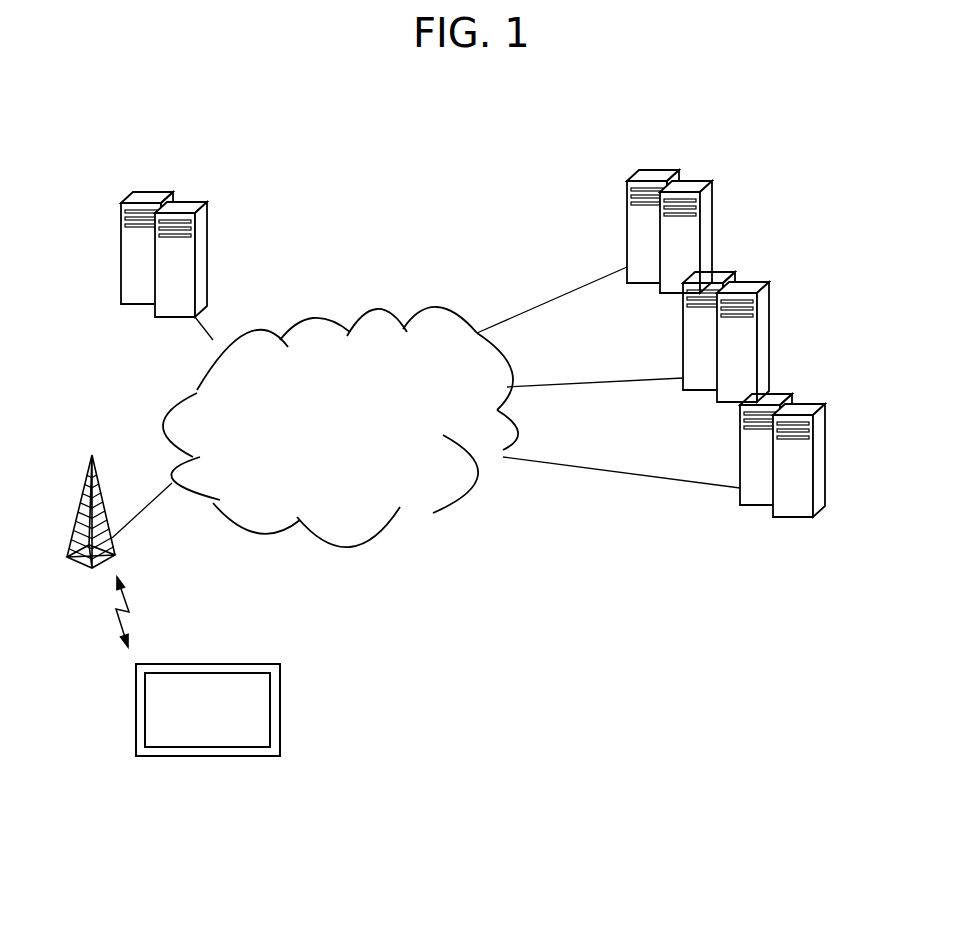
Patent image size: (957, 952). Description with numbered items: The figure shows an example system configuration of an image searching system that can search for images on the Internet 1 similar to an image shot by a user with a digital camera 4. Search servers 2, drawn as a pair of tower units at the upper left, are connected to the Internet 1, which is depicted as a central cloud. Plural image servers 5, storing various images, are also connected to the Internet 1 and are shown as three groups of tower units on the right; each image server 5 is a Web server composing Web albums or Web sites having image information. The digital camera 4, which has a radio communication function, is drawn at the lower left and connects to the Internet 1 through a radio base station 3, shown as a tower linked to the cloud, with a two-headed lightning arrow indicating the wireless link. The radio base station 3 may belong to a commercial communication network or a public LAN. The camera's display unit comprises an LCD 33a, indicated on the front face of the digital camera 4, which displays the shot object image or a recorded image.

The Internet 1 is at (379, 314).
The search server 2 is at (206, 219).
The radio base station 3 is at (98, 473).
The digital camera 4 is at (288, 719).
The image server 5 is at (712, 197).
The LCD 33a is at (218, 735).